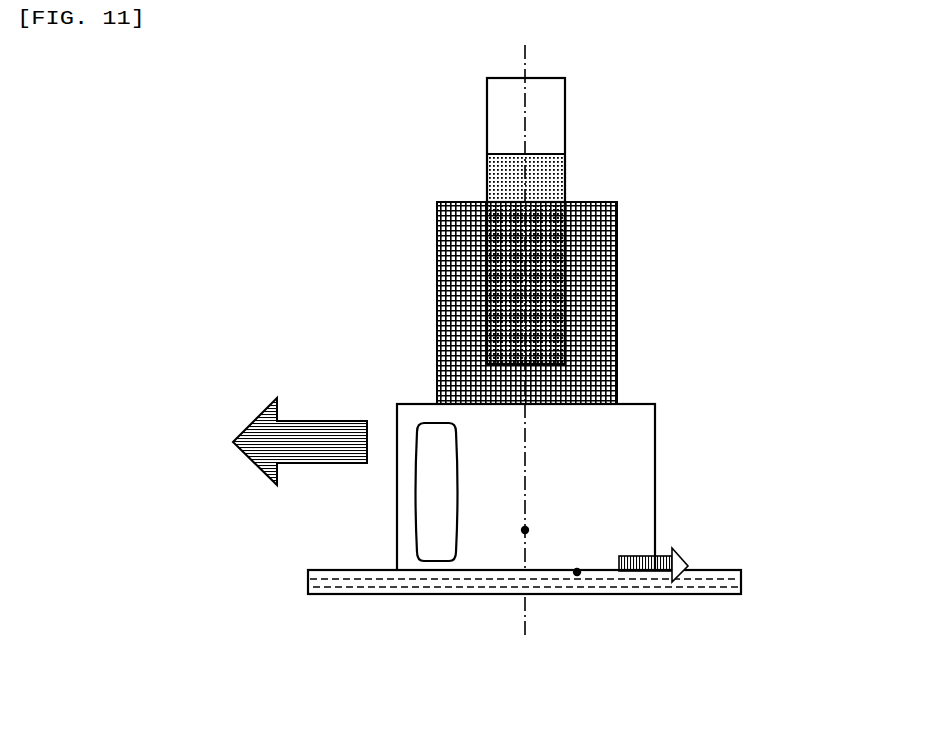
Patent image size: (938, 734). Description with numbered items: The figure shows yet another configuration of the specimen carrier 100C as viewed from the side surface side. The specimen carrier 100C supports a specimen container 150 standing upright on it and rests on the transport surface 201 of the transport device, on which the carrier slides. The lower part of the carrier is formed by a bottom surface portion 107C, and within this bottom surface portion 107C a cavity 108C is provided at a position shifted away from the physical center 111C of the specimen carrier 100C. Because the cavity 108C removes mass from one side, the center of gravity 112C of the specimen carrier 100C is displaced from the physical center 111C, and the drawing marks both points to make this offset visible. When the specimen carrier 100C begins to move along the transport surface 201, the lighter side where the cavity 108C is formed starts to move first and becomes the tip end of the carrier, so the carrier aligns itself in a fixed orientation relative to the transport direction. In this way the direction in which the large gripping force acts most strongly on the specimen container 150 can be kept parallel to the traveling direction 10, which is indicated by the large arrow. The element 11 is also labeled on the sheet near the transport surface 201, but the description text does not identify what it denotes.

The moving direction of the workpiece 10 is at (263, 437).
The workpiece 11 is at (690, 575).
The imaging device 100C is at (410, 398).
The housing 107C is at (648, 403).
The lens 108C is at (456, 492).
The focal point on optical axis 111C is at (525, 530).
The imaging position on the workpiece 112C is at (577, 572).
The illumination unit 150 is at (566, 138).
The stage 201 is at (308, 580).